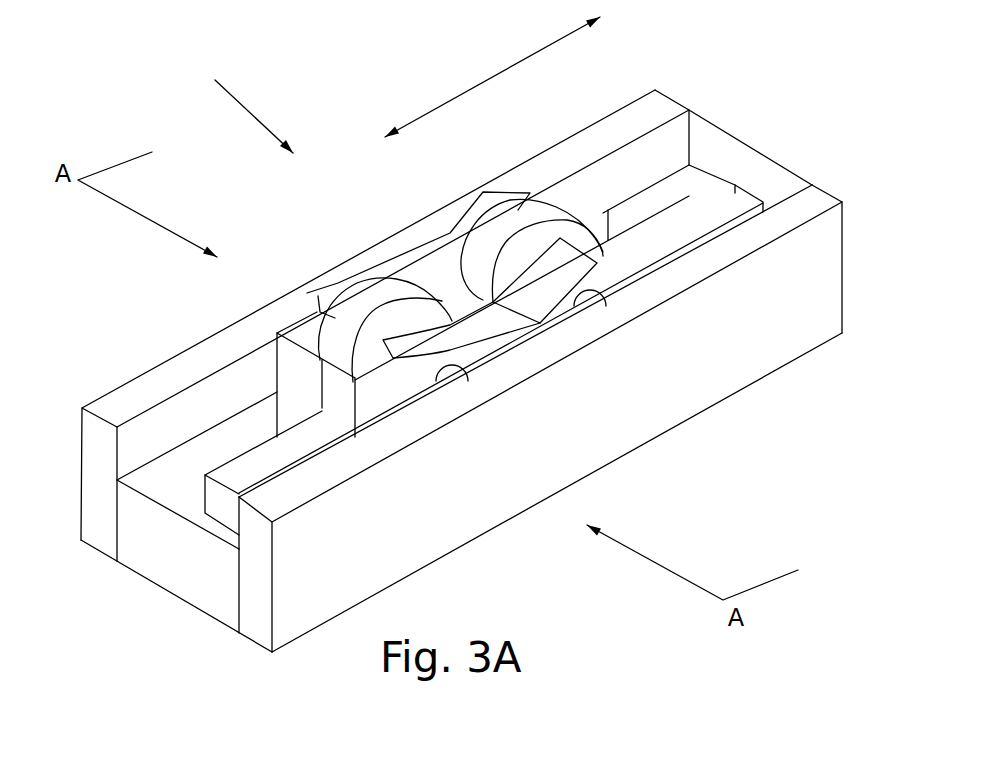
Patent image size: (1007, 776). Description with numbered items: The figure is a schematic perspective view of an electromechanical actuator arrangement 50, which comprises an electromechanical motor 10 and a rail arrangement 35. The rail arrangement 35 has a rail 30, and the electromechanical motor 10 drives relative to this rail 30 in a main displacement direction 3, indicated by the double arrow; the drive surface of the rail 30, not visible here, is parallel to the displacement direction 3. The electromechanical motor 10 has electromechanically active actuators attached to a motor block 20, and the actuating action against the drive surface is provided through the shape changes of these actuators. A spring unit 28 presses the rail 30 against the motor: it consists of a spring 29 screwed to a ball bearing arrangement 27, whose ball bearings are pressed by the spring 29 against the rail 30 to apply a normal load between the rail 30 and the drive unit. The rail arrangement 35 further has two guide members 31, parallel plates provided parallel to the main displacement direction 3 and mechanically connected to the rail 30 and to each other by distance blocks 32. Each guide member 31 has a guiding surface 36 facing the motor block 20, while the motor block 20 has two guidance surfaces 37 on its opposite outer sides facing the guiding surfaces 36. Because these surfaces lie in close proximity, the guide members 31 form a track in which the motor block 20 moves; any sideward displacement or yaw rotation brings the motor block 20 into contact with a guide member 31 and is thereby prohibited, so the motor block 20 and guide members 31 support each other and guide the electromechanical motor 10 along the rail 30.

The main displacement direction 3 is at (492, 77).
The electromechanical motor 10 is at (297, 330).
The motor block 20 is at (268, 405).
The ball bearing arrangement 27 is at (353, 307).
The spring unit 28 is at (487, 237).
The spring 29 is at (515, 320).
The rail 30 is at (277, 458).
The guide members 31 is at (658, 100).
The distance blocks 32 is at (172, 568).
The rail arrangement 35 is at (200, 593).
The guiding surface 36 is at (150, 437).
The guidance surfaces 37 is at (295, 413).
The electromechanical actuator arrangement 50 is at (246, 100).